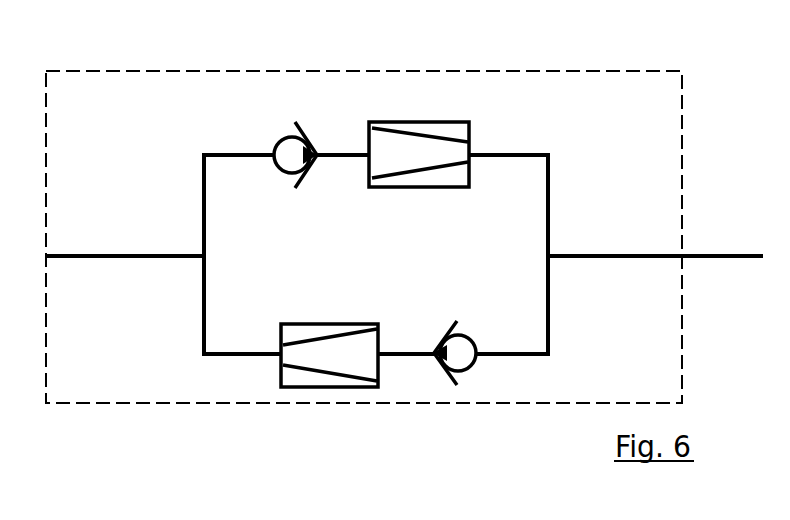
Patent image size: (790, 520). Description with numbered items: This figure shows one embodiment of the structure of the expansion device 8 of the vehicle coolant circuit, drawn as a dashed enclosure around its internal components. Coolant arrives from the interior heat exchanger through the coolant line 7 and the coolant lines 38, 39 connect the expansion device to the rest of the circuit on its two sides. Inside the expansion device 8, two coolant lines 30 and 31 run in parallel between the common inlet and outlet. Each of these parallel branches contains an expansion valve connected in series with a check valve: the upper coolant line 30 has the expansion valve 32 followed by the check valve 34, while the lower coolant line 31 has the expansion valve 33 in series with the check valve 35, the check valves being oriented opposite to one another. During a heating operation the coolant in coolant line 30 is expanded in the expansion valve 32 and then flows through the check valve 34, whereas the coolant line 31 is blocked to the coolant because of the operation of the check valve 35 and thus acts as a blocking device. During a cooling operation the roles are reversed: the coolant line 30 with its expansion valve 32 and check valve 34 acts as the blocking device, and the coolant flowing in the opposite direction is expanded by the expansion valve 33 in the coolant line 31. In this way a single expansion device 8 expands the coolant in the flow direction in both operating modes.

The coolant line 7 is at (703, 254).
The expansion device 8 is at (381, 60).
The coolant line 30 is at (202, 213).
The coolant line 31 is at (203, 297).
The expansion valve 32 is at (469, 122).
The expansion valve 33 is at (302, 389).
The check valve 34 is at (276, 143).
The check valve 35 is at (470, 370).
The coolant line 38 is at (602, 254).
The coolant line 39 is at (105, 253).